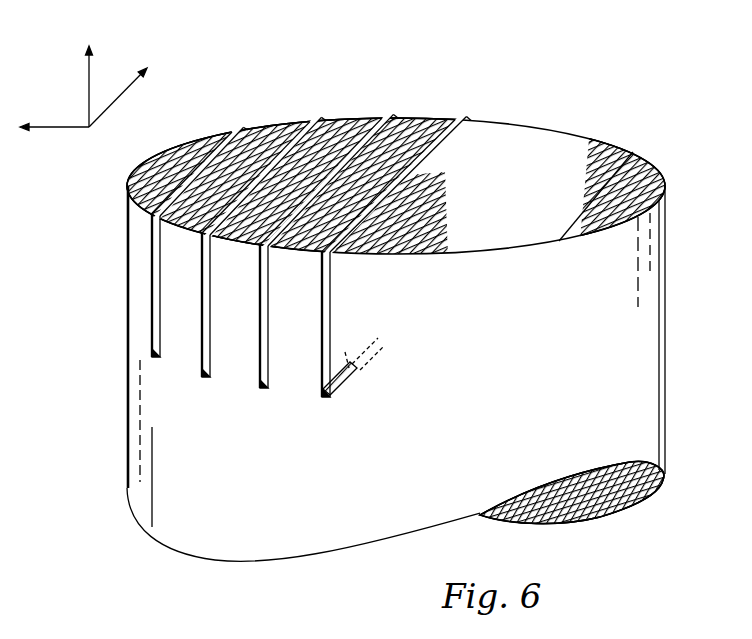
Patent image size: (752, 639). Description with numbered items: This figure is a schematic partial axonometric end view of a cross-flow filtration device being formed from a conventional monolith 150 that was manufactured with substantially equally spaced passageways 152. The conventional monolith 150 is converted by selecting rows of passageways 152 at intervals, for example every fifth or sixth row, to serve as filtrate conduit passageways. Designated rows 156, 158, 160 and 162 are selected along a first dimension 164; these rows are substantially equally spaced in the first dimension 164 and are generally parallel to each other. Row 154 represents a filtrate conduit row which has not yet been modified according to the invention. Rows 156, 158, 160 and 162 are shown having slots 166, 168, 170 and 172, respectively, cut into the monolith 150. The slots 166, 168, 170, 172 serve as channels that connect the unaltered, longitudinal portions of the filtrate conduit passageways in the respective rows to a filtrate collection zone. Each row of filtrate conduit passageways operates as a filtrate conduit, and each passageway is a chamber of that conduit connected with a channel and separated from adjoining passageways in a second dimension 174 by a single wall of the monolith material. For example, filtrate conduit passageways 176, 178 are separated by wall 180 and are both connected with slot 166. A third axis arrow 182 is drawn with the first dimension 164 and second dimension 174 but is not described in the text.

The monolith 150 is at (588, 80).
The passageways 152 is at (279, 134).
The filtrate conduit row 154 is at (640, 154).
The row 156 is at (468, 113).
The row 158 is at (399, 111).
The row 160 is at (326, 117).
The row 162 is at (242, 124).
The first dimension 164 is at (59, 130).
The slot 166 is at (322, 358).
The slot 168 is at (265, 360).
The slot 170 is at (207, 347).
The slot 172 is at (157, 325).
The second dimension 174 is at (122, 96).
The filtrate conduit passageway 176 is at (351, 380).
The filtrate conduit passageway 178 is at (357, 368).
The wall 180 is at (345, 352).
The coordinate axis 182 is at (90, 75).